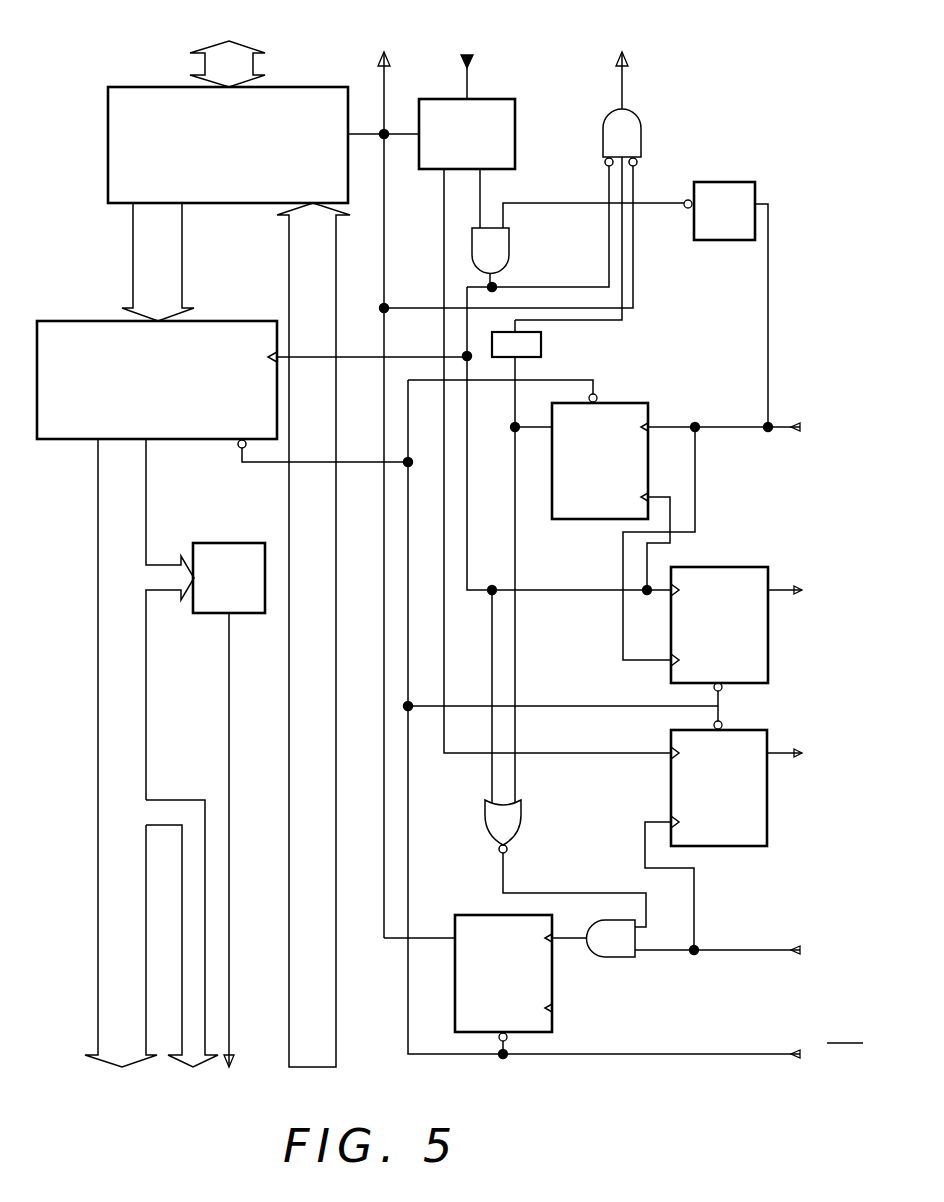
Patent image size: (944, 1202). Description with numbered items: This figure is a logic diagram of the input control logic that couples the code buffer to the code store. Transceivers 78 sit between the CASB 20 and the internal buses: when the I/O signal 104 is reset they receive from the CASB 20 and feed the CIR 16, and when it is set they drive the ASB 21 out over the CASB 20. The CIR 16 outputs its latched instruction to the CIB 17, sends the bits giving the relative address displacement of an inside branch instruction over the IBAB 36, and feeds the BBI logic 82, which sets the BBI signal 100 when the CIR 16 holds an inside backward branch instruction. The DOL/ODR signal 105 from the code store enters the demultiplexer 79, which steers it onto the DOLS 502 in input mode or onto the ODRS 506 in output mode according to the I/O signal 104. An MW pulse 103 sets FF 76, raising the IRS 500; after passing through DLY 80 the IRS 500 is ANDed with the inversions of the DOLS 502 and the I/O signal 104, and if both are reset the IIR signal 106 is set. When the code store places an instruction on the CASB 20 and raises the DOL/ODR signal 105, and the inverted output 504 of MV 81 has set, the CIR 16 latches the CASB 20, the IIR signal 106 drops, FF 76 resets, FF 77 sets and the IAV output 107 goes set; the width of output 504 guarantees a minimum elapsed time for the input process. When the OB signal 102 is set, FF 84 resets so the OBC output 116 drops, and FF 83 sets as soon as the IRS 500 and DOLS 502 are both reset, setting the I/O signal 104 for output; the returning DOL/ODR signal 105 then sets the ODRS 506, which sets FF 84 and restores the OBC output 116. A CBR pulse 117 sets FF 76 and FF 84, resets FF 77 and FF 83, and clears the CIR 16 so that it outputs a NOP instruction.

The CASB 20 is at (206, 56).
The transceivers 78 is at (300, 87).
The ASB 21 is at (337, 1018).
The CIR 16 is at (60, 321).
The CIB 17 is at (98, 665).
The IBAB 36 is at (180, 800).
The BBI logic 82 is at (205, 613).
The BBI signal 100 is at (229, 1018).
The I/O signal 104 is at (386, 76).
The DOL/ODR signal 105 is at (469, 77).
The demultiplexer (DMUX) 79 is at (515, 101).
The IIR signal 106 is at (624, 78).
The inverted output of MV 504 is at (520, 203).
The MV 81 is at (755, 183).
The DLY 80 is at (541, 346).
The FF 76 is at (630, 403).
The MW pulse 103 is at (712, 427).
The DOLS 502 is at (469, 542).
The IRS 500 is at (517, 555).
The FF 77 is at (705, 567).
The IAV output 107 is at (788, 589).
The ODRS 506 is at (538, 753).
The FF 84 is at (730, 846).
The OBC output 116 is at (788, 752).
The FF 83 is at (460, 915).
The OB signal 102 is at (745, 950).
The CBR pulse 117 is at (705, 1054).